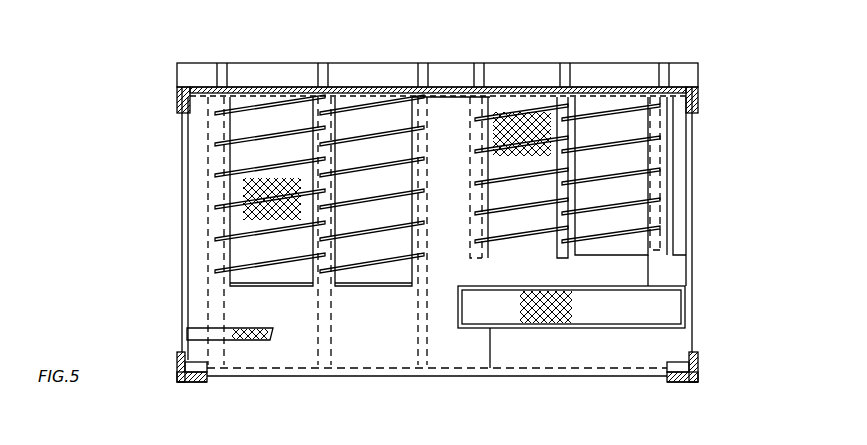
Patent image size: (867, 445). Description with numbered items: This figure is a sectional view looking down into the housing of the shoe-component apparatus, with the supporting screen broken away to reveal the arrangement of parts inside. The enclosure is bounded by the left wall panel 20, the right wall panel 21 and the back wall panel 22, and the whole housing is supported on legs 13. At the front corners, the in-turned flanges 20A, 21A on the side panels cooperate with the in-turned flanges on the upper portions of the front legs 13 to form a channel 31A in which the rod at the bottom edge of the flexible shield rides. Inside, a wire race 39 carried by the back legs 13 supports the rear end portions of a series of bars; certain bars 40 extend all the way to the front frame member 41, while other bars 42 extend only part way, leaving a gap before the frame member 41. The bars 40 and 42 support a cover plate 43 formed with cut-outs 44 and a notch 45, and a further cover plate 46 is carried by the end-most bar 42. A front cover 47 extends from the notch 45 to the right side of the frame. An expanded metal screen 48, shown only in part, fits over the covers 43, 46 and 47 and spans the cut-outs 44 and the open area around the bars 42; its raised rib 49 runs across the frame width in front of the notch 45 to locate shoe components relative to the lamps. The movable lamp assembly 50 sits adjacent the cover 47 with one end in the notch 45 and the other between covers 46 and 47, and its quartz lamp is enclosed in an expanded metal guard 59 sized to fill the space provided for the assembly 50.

The legs 13 is at (178, 98).
The wall panel 20 is at (181, 168).
The in-turned flange 20A is at (187, 344).
The wall panel 21 is at (697, 215).
The in-turned flange 21A is at (678, 360).
The back wall panel 22 is at (600, 92).
The channel 31A is at (199, 383).
The wire race 39 is at (378, 62).
The bars 40 is at (310, 155).
The frame member 41 is at (290, 378).
The bars 42 is at (555, 187).
The cover plate 43 is at (386, 320).
The cut-outs 44 is at (276, 285).
The notch 45 is at (475, 285).
The cover plate 46 is at (685, 280).
The front cover 47 is at (568, 356).
The expanded metal screen 48 is at (527, 113).
The raised rib 49 is at (288, 304).
The movable lamp assembly 50 is at (572, 283).
The expanded metal guard 59 is at (624, 314).